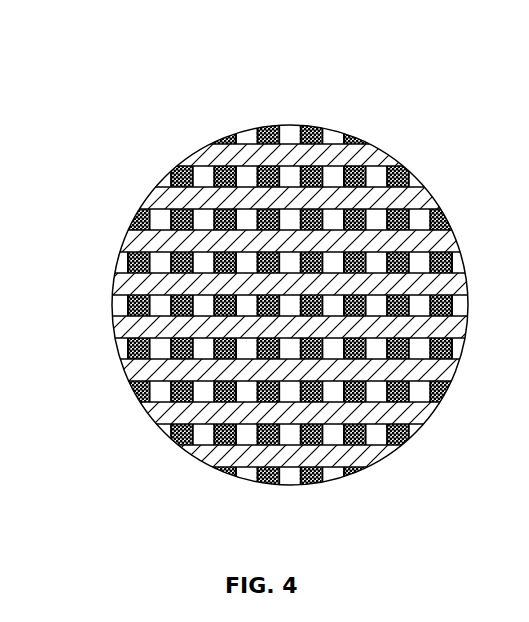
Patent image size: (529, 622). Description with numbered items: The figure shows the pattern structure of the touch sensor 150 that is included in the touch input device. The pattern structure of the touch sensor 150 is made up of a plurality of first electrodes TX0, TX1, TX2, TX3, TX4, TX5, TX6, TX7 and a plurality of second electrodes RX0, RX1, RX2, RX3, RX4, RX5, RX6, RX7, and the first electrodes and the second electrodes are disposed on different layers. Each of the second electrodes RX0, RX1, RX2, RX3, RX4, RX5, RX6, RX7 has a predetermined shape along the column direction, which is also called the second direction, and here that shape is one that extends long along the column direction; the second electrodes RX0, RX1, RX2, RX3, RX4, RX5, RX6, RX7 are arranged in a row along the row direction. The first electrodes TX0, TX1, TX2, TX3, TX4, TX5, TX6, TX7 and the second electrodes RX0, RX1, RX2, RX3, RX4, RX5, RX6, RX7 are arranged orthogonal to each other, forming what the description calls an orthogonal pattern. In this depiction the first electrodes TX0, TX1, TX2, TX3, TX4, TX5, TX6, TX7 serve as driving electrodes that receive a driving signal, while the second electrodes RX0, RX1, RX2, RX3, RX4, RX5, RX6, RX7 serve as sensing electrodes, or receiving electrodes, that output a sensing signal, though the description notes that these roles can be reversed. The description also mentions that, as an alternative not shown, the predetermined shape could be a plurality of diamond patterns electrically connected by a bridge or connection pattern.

The touch sensor 150 is at (416, 463).
The first electrode TX0 is at (187, 155).
The first electrode TX1 is at (138, 199).
The first electrode TX2 is at (118, 241).
The first electrode TX3 is at (110, 284).
The first electrode TX4 is at (110, 327).
The first electrode TX5 is at (120, 369).
The first electrode TX6 is at (138, 412).
The first electrode TX7 is at (187, 457).
The second electrode RX0 is at (128, 220).
The second electrode RX1 is at (174, 171).
The second electrode RX2 is at (225, 133).
The second electrode RX3 is at (267, 123).
The second electrode RX4 is at (313, 120).
The second electrode RX5 is at (355, 130).
The second electrode RX6 is at (407, 163).
The second electrode RX7 is at (448, 208).